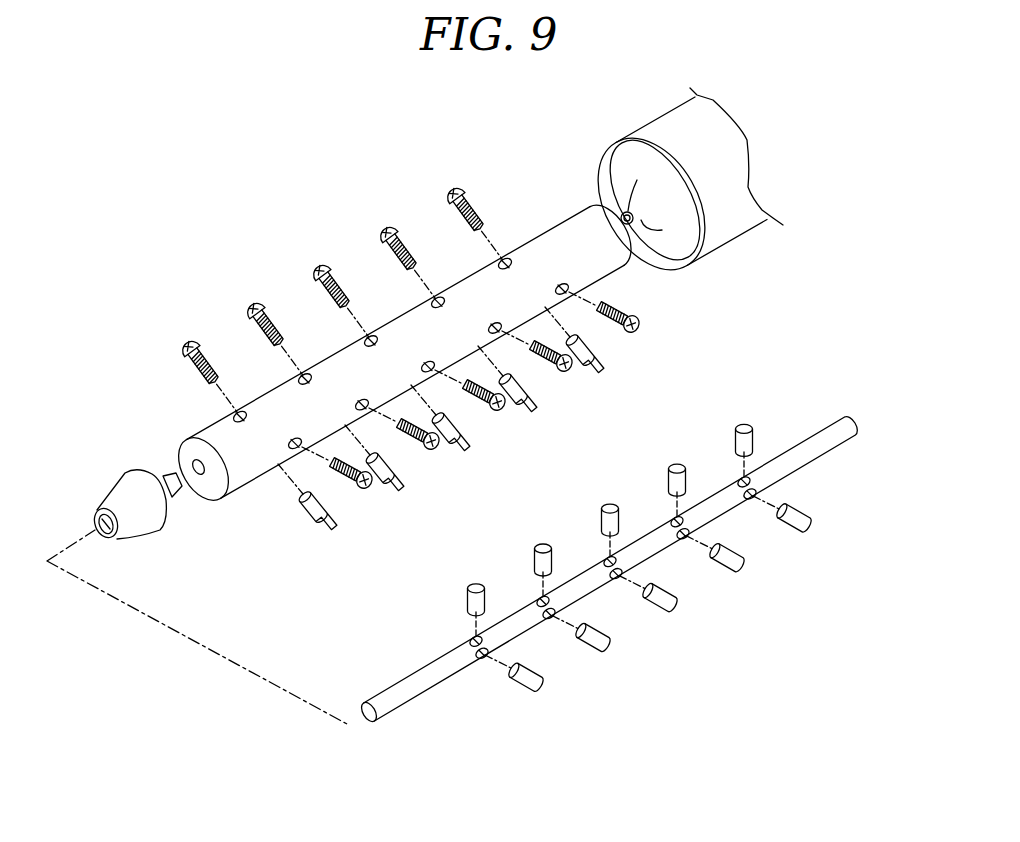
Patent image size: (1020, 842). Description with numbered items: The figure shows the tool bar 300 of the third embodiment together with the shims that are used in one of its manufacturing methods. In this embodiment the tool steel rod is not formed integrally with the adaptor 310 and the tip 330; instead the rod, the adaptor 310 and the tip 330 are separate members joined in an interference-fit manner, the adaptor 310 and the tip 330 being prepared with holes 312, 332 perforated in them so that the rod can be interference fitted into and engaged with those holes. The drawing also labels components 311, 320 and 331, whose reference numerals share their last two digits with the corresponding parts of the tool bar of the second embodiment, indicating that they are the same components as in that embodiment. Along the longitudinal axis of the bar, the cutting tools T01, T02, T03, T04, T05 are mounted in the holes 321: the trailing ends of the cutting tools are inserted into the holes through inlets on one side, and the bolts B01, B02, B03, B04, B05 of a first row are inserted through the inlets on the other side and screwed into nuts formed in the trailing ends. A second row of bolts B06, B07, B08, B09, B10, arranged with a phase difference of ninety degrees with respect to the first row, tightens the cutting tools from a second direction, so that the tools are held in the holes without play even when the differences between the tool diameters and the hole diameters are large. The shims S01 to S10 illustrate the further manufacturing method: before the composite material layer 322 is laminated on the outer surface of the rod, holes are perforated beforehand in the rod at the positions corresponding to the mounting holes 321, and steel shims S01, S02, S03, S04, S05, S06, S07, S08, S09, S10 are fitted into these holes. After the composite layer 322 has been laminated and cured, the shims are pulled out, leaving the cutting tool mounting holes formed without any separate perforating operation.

The tool bar 300 is at (236, 99).
The adaptor 310 is at (743, 220).
The front flange of knob body 311 is at (673, 270).
The hole 312 is at (623, 140).
The terminal drum 320 is at (557, 235).
The holes 321 is at (506, 257).
The composite material layer 322 is at (185, 458).
The tip 330 is at (118, 498).
The knob shaft 331 is at (177, 486).
The hole 332 is at (95, 535).
The bolt B01 is at (206, 364).
The bolt B02 is at (273, 325).
The bolt B03 is at (341, 286).
The bolt B04 is at (407, 247).
The bolt B05 is at (476, 207).
The bolt B06 is at (370, 492).
The bolt B07 is at (437, 455).
The bolt B08 is at (505, 418).
The bolt B09 is at (572, 378).
The bolt B10 is at (640, 337).
The cutting tool T01 is at (313, 517).
The cutting tool T02 is at (394, 473).
The cutting tool T03 is at (460, 433).
The cutting tool T04 is at (528, 394).
The cutting tool T05 is at (594, 354).
The steel shim S01 is at (456, 615).
The steel shim S02 is at (523, 576).
The steel shim S03 is at (590, 536).
The steel shim S04 is at (657, 496).
The steel shim S05 is at (724, 456).
The steel shim S06 is at (529, 672).
The steel shim S07 is at (596, 632).
The steel shim S08 is at (663, 592).
The steel shim S09 is at (730, 553).
The steel shim S10 is at (797, 513).